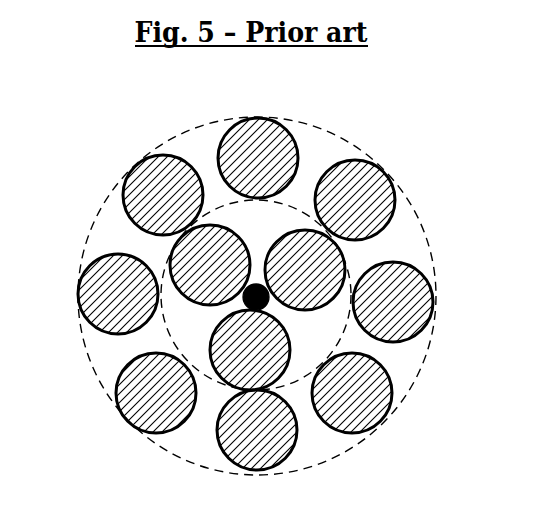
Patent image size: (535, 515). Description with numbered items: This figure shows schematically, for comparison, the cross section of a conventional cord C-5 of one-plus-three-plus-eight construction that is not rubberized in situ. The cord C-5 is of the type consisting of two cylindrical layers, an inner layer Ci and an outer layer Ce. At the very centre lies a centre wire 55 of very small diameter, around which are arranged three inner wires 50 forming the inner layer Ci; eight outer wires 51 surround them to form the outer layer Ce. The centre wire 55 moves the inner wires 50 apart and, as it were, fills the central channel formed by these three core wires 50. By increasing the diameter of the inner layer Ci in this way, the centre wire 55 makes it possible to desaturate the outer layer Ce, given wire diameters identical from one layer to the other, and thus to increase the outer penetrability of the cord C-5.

The inner wire 50 is at (305, 272).
The outer wire 51 is at (160, 196).
The centre wire 55 is at (262, 302).
The outer layer Ce is at (193, 149).
The inner layer Ci is at (183, 323).
The conventional 1+3+8 cord C-5 is at (311, 114).